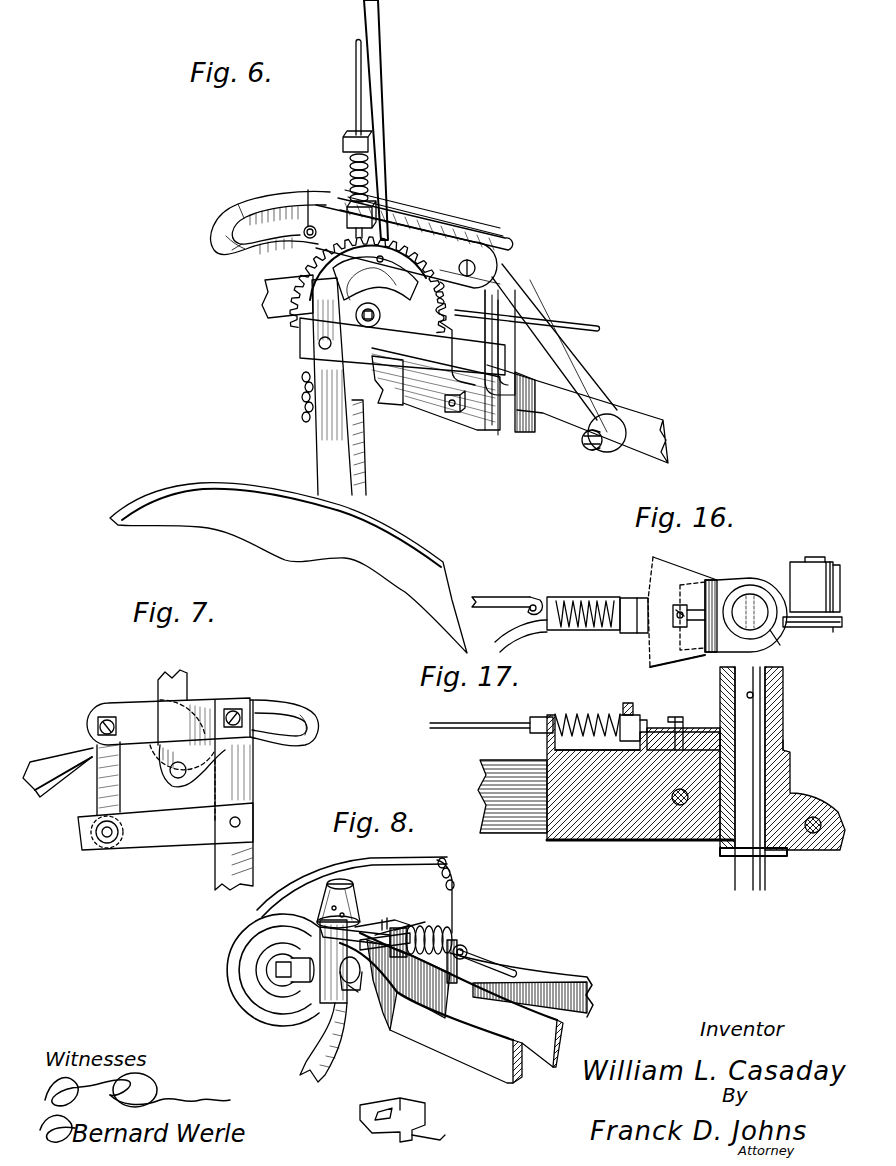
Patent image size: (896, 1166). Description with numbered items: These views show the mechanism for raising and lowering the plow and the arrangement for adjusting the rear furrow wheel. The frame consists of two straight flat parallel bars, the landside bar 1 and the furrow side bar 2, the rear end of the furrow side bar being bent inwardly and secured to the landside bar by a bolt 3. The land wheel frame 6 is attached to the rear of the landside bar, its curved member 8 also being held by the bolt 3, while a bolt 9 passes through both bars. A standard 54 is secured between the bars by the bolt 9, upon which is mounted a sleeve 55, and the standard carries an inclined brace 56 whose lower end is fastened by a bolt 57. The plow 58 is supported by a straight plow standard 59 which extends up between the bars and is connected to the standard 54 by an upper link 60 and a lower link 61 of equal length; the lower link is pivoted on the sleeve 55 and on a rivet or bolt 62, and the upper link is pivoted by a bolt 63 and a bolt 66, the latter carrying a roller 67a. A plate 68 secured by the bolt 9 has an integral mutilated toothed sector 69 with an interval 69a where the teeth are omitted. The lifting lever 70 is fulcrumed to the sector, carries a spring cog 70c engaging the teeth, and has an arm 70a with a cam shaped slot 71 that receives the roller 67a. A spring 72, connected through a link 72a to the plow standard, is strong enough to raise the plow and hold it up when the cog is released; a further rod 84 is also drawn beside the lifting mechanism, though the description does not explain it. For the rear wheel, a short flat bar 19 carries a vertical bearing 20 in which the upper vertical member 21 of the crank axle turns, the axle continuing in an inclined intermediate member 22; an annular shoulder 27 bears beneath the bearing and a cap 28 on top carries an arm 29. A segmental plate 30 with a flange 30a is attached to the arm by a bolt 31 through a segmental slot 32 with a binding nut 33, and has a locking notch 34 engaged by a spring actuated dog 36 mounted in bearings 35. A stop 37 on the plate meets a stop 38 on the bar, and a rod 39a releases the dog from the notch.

In FIG. 6, the landside bar 1 is at (651, 399).
In FIG. 8, the landside bar 1 is at (565, 1043).
In FIG. 6, the furrow side bar 2 is at (394, 385).
In FIG. 16, the furrow side bar 2 is at (501, 591).
In FIG. 17, the furrow side bar 2 is at (495, 796).
In FIG. 8, the furrow side bar 2 is at (431, 1011).
In FIG. 17, the bolt 3 is at (662, 842).
In FIG. 8, the bolt 3 is at (354, 992).
In FIG. 16, the land wheel frame 6 is at (521, 642).
In FIG. 8, the land wheel frame 6 is at (521, 985).
In FIG. 16, the curved member 8 is at (520, 642).
In FIG. 8, the curved member 8 is at (588, 995).
In FIG. 6, the bolt 9 is at (450, 413).
In FIG. 17, the short flat bar 19 is at (606, 842).
In FIG. 8, the short flat bar 19 is at (452, 975).
In FIG. 17, the vertical bearing 20 is at (790, 772).
In FIG. 8, the vertical bearing 20 is at (323, 975).
In FIG. 16, the upper vertical member 21 is at (775, 635).
In FIG. 17, the upper vertical member 21 is at (765, 690).
In FIG. 8, the upper vertical member 21 is at (350, 884).
In FIG. 16, the intermediate member 22 is at (838, 632).
In FIG. 8, the intermediate member 22 is at (313, 1055).
In FIG. 17, the annular shoulder 27 is at (722, 858).
In FIG. 8, the annular shoulder 27 is at (320, 1030).
In FIG. 17, the cap 28 is at (783, 728).
In FIG. 8, the cap 28 is at (395, 892).
In FIG. 16, the arm 29 is at (722, 588).
In FIG. 17, the arm 29 is at (712, 730).
In FIG. 8, the arm 29 is at (372, 930).
In FIG. 16, the segmental plate 30 is at (663, 572).
In FIG. 17, the segmental plate 30 is at (665, 727).
In FIG. 8, the segmental plate 30 is at (398, 934).
In FIG. 17, the downwardly projecting flange 30a is at (597, 742).
In FIG. 8, the downwardly projecting flange 30a is at (416, 1152).
In FIG. 16, the bolt 31 is at (680, 605).
In FIG. 17, the bolt 31 is at (686, 712).
In FIG. 8, the bolt 31 is at (392, 926).
In FIG. 16, the segmental slot 32 is at (680, 628).
In FIG. 8, the segmental slot 32 is at (345, 925).
In FIG. 16, the binding nut 33 is at (680, 628).
In FIG. 17, the binding nut 33 is at (648, 720).
In FIG. 8, the binding nut 33 is at (408, 934).
In FIG. 16, the locking notch 34 is at (670, 620).
In FIG. 17, the locking notch 34 is at (632, 696).
In FIG. 8, the locking notch 34 is at (410, 1063).
In FIG. 17, the bearings 35 is at (550, 716).
In FIG. 8, the bearings 35 is at (466, 946).
In FIG. 16, the spring actuated dog 36 is at (608, 596).
In FIG. 17, the spring actuated dog 36 is at (620, 716).
In FIG. 8, the spring actuated dog 36 is at (424, 935).
In FIG. 8, the stop 37 is at (362, 1154).
In FIG. 16, the stop 38 is at (637, 596).
In FIG. 16, the rod 39a is at (522, 598).
In FIG. 17, the rod 39a is at (466, 722).
In FIG. 8, the rod 39a is at (498, 966).
In FIG. 6, the standard 54 is at (487, 312).
In FIG. 7, the standard 54 is at (121, 778).
In FIG. 7, the sleeve 55 is at (107, 845).
In FIG. 6, the inclined brace 56 is at (566, 365).
In FIG. 7, the inclined brace 56 is at (58, 772).
In FIG. 6, the bolt 57 is at (590, 452).
In FIG. 6, the plow 58 is at (288, 568).
In FIG. 6, the plow standard 59 is at (352, 386).
In FIG. 7, the plow standard 59 is at (247, 795).
In FIG. 6, the upper link 60 is at (460, 254).
In FIG. 7, the upper link 60 is at (168, 730).
In FIG. 6, the lower link 61 is at (402, 346).
In FIG. 7, the lower link 61 is at (165, 826).
In FIG. 6, the rivet or bolt 62 is at (318, 343).
In FIG. 7, the rivet or bolt 62 is at (241, 822).
In FIG. 6, the bolt 63 is at (478, 262).
In FIG. 7, the bolt 63 is at (104, 722).
In FIG. 6, the bolt 66 is at (311, 226).
In FIG. 7, the bolt 66 is at (238, 712).
In FIG. 6, the roller 67a is at (307, 197).
In FIG. 6, the plate 68 is at (368, 285).
In FIG. 6, the mutilated toothed sector 69 is at (408, 233).
In FIG. 6, the interval 69a is at (440, 236).
In FIG. 6, the lifting lever 70 is at (383, 138).
In FIG. 7, the lifting lever 70 is at (191, 719).
In FIG. 6, the arm 70a is at (262, 204).
In FIG. 7, the arm 70a is at (284, 711).
In FIG. 6, the spring cog 70c is at (366, 215).
In FIG. 6, the cam shaped slot 71 is at (242, 250).
In FIG. 7, the cam shaped slot 71 is at (303, 722).
In FIG. 16, the spring 72 is at (840, 567).
In FIG. 17, the spring 72 is at (838, 850).
In FIG. 8, the spring 72 is at (321, 941).
In FIG. 8, the link 72a is at (456, 908).
In FIG. 6, the rod 84 is at (560, 318).